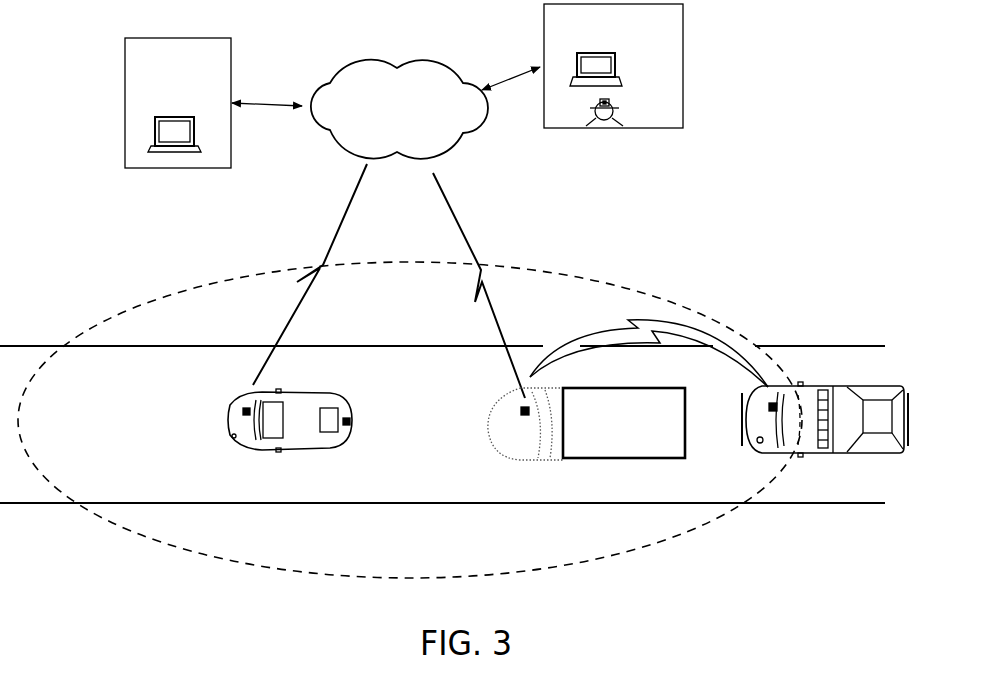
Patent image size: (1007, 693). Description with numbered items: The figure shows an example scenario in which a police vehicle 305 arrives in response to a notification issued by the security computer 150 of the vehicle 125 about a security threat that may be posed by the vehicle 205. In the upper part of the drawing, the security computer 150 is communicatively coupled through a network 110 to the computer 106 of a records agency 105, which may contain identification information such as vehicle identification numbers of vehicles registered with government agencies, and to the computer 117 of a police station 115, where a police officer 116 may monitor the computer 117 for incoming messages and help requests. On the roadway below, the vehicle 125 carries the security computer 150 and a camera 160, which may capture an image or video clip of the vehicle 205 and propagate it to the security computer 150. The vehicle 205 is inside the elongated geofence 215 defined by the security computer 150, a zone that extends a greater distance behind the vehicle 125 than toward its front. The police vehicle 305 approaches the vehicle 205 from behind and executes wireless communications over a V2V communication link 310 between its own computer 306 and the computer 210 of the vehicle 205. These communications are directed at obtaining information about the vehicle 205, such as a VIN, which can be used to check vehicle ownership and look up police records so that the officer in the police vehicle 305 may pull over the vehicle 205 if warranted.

The records agency 105 is at (227, 58).
The computer 106 is at (193, 123).
The network 110 is at (437, 90).
The police station 115 is at (647, 26).
The police officer 116 is at (630, 110).
The computer 117 is at (614, 58).
The vehicle 125 is at (224, 447).
The security computer 150 is at (243, 405).
The camera 160 is at (352, 435).
The vehicle 205 is at (480, 450).
The computer 210 is at (520, 403).
The geofence 215 is at (596, 277).
The police vehicle 305 is at (748, 460).
The computer 306 is at (767, 401).
The V2V communication link 310 is at (594, 333).